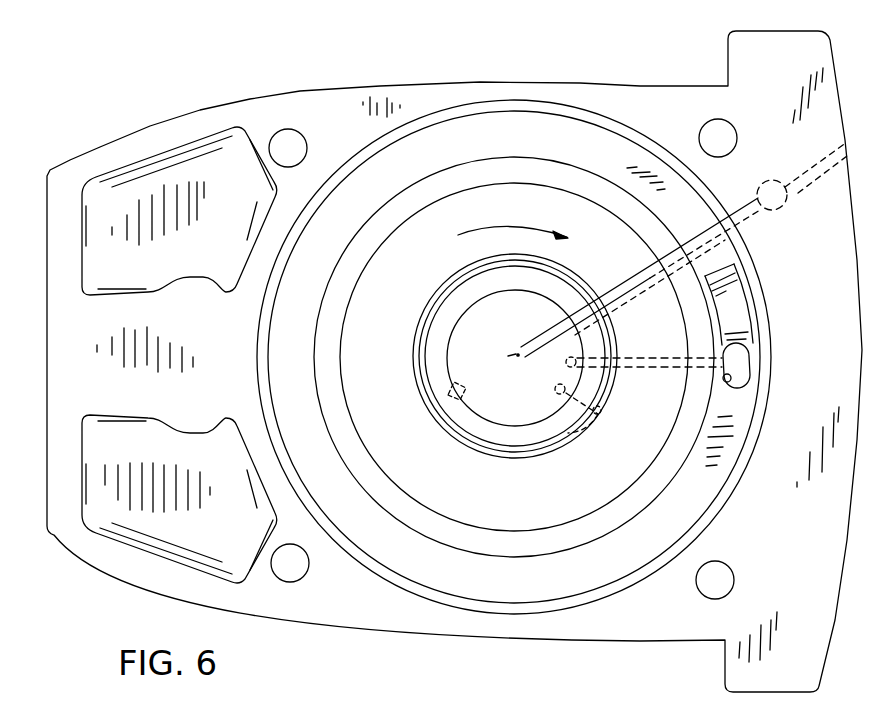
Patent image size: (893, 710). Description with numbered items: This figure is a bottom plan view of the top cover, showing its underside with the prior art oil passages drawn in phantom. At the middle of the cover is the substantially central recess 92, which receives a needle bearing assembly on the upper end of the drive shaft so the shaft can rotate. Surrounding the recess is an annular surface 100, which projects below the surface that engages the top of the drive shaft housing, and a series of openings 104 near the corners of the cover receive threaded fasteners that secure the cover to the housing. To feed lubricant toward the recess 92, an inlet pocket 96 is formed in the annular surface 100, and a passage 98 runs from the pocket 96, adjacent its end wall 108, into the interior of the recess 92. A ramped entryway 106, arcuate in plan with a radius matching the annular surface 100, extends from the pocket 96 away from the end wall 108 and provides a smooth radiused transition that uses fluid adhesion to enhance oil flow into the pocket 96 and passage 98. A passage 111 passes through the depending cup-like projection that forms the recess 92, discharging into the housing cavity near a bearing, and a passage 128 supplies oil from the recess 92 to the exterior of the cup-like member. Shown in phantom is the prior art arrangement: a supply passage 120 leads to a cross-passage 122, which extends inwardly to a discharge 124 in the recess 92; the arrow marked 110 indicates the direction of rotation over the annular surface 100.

The central recess 92 is at (494, 360).
The inlet pocket 96 is at (742, 383).
The passage 98 is at (648, 362).
The annular surface 100 is at (355, 220).
The openings 104 is at (300, 135).
The ramped entryway 106 is at (744, 315).
The end wall 108 is at (726, 377).
The direction of rotation 110 is at (500, 228).
The passage 111 is at (570, 436).
The supply passage 120 is at (790, 205).
The cross-passage 122 is at (747, 220).
The discharge 124 is at (519, 360).
The passage 128 is at (448, 392).